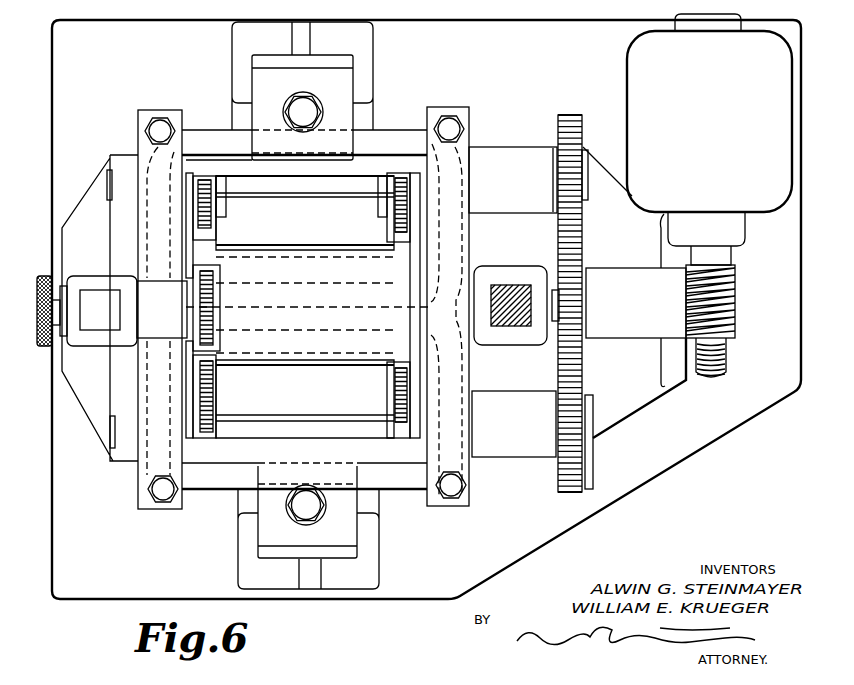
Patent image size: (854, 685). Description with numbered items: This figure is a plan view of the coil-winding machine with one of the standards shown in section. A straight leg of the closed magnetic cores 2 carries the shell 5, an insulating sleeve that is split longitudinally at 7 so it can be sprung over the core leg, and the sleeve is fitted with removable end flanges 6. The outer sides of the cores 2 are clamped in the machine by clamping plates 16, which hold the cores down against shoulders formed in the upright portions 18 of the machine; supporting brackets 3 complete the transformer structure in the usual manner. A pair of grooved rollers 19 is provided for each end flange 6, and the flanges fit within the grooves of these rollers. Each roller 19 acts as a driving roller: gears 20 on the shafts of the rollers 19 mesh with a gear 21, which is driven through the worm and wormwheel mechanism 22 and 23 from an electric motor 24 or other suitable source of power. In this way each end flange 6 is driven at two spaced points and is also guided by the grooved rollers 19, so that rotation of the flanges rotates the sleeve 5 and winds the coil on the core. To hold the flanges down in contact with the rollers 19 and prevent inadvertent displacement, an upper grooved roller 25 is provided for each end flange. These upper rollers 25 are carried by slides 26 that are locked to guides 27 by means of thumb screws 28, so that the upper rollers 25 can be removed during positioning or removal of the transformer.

The cores 2 is at (207, 136).
The supporting brackets 3 is at (143, 498).
The shell 5 is at (287, 362).
The end flanges 6 is at (399, 282).
The split 7 is at (301, 266).
The clamping plates 16 is at (344, 90).
The upright portions 18 is at (245, 47).
The grooved rollers 19 is at (222, 238).
The gears 20 is at (561, 117).
The gear 21 is at (584, 261).
The worm 22 is at (733, 308).
The wormwheel 23 is at (731, 360).
The electric motor 24 is at (627, 94).
The upper grooved roller 25 is at (223, 299).
The slides 26 is at (87, 276).
The guides 27 is at (100, 317).
The thumb screws 28 is at (44, 275).